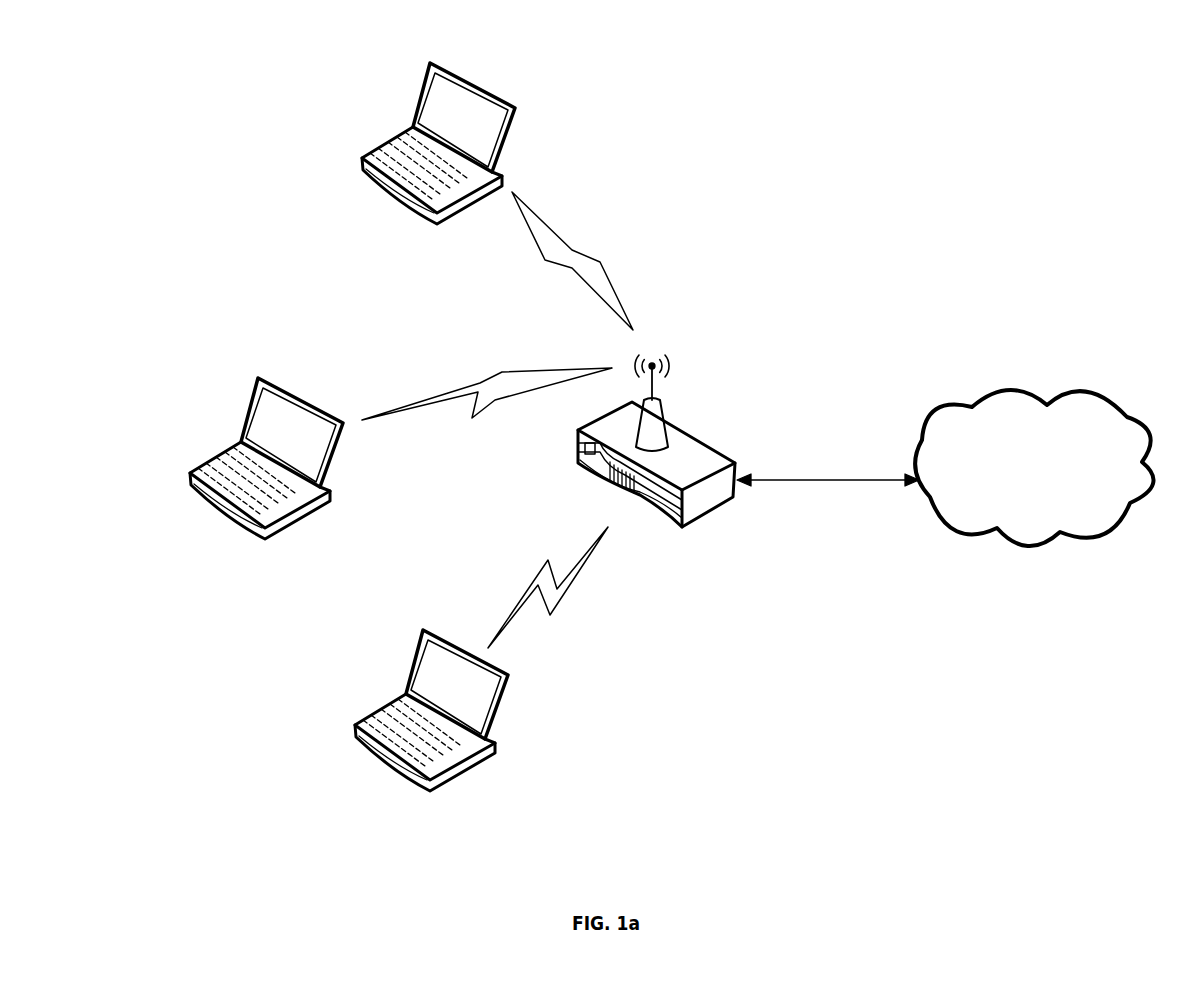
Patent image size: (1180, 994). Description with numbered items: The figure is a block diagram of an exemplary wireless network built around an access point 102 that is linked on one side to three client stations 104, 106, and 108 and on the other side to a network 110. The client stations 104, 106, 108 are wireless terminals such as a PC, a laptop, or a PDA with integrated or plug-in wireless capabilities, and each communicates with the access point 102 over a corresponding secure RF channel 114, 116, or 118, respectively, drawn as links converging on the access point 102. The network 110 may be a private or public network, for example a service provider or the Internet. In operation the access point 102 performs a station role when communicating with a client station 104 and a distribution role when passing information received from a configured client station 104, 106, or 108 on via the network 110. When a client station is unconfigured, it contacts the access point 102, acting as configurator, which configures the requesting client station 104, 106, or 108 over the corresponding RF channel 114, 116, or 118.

The access point 102 is at (712, 437).
The client station 104 is at (418, 82).
The client station 106 is at (248, 396).
The client station 108 is at (416, 636).
The network 110 is at (976, 399).
The RF channel 114 is at (553, 222).
The RF channel 116 is at (468, 384).
The RF channel 118 is at (531, 584).